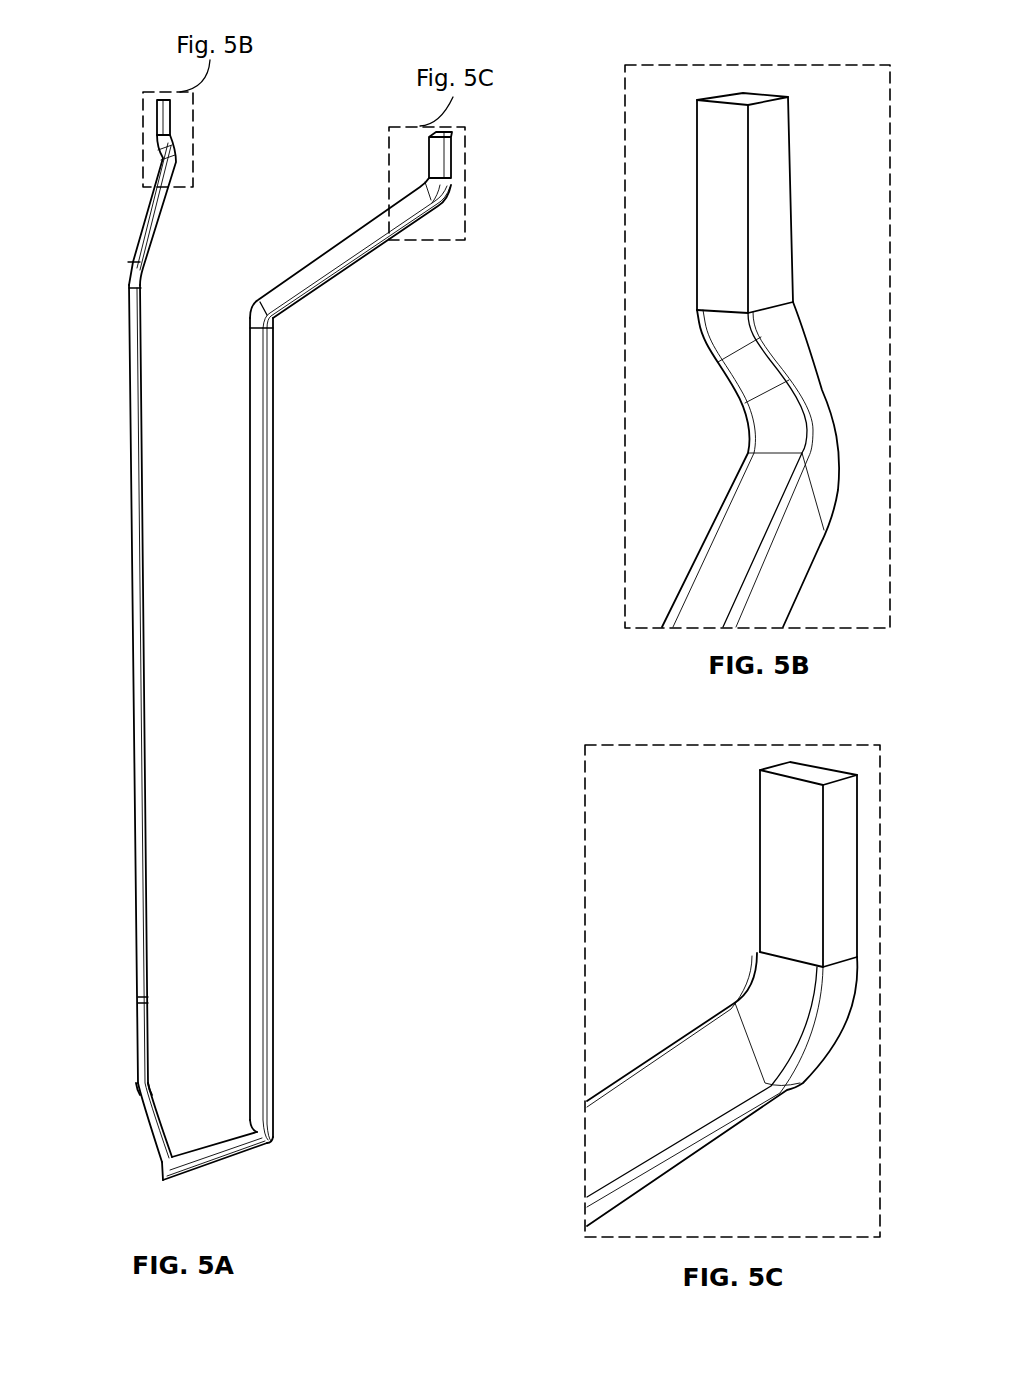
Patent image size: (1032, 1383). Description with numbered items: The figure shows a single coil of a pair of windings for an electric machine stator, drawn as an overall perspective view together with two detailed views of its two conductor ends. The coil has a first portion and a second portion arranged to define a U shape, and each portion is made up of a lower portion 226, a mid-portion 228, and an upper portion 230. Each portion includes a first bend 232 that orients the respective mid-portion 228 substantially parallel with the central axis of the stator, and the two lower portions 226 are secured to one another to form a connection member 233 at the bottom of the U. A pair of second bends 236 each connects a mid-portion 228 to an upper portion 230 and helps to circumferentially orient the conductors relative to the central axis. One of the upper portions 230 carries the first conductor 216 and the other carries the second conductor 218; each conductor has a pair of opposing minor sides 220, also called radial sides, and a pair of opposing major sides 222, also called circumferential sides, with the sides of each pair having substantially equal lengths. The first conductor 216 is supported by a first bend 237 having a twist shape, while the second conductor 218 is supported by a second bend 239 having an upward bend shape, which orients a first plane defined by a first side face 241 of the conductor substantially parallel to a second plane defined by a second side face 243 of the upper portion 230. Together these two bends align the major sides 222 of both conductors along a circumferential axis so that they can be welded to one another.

In FIG. 5A, the first conductor 216 is at (153, 98).
In FIG. 5B, the first conductor 216 is at (694, 100).
In FIG. 5A, the second conductor 218 is at (453, 132).
In FIG. 5C, the second conductor 218 is at (856, 775).
In FIG. 5B, the minor sides 220 is at (763, 94).
In FIG. 5C, the minor sides 220 is at (780, 770).
In FIG. 5B, the major sides 222 is at (705, 99).
In FIG. 5C, the major sides 222 is at (825, 771).
In FIG. 5A, the lower portion 226 is at (163, 1167).
In FIG. 5A, the mid-portion 228 is at (120, 288).
In FIG. 5A, the upper portion 230 is at (127, 100).
In FIG. 5A, the first bend 232 is at (124, 1088).
In FIG. 5A, the connection member 233 is at (155, 1191).
In FIG. 5A, the second bends 236 is at (150, 279).
In FIG. 5A, the first bend 237 is at (181, 137).
In FIG. 5B, the first bend 237 is at (718, 388).
In FIG. 5A, the second bend 239 is at (456, 185).
In FIG. 5C, the second bend 239 is at (832, 1071).
In FIG. 5C, the first side face 241 is at (786, 871).
In FIG. 5C, the second side face 243 is at (688, 1063).